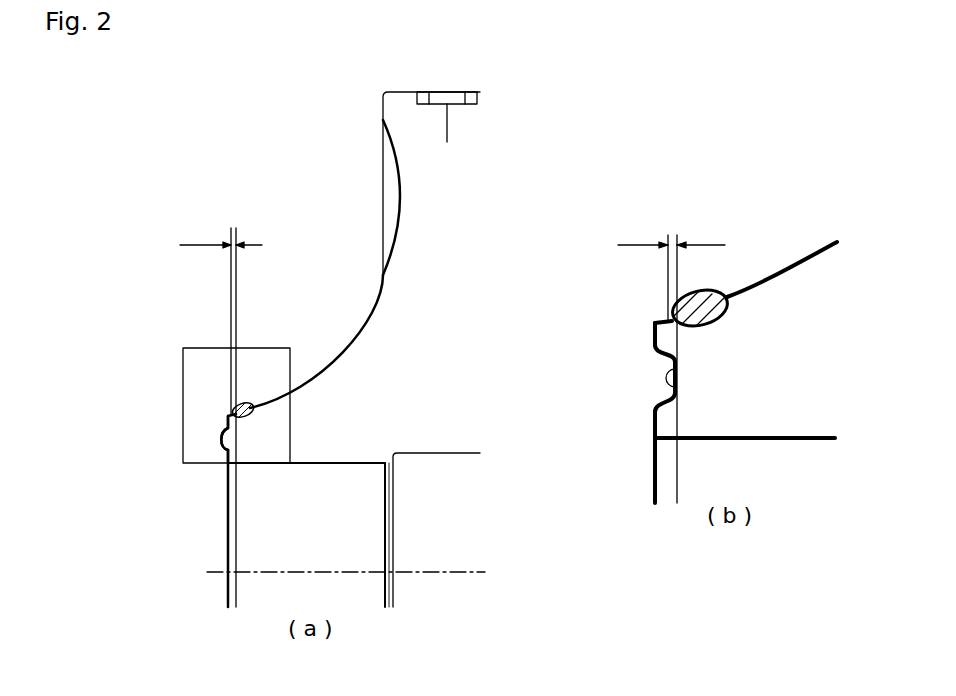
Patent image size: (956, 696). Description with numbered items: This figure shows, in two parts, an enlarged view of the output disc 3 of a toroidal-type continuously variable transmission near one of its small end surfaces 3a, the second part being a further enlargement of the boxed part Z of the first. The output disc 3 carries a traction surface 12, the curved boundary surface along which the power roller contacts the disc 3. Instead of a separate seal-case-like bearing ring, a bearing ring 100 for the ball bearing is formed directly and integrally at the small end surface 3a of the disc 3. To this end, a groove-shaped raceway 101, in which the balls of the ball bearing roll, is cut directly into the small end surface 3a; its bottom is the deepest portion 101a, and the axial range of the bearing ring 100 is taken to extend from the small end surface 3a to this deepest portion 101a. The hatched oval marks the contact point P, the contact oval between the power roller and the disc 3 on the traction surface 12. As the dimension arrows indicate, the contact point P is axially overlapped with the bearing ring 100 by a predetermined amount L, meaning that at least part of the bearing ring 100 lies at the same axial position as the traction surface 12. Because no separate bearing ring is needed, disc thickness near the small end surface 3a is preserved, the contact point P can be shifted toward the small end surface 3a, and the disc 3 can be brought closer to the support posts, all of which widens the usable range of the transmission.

The output disc 3 is at (425, 168).
The traction surface 12 is at (370, 308).
The small end surface 3a is at (228, 452).
The groove-shaped raceway 101 is at (229, 434).
The deepest portion of the groove-shaped raceway 101a is at (237, 440).
The bearing ring 100 is at (237, 449).
The contact point P is at (247, 403).
The predetermined amount L is at (452, 228).
The part Z is at (180, 400).